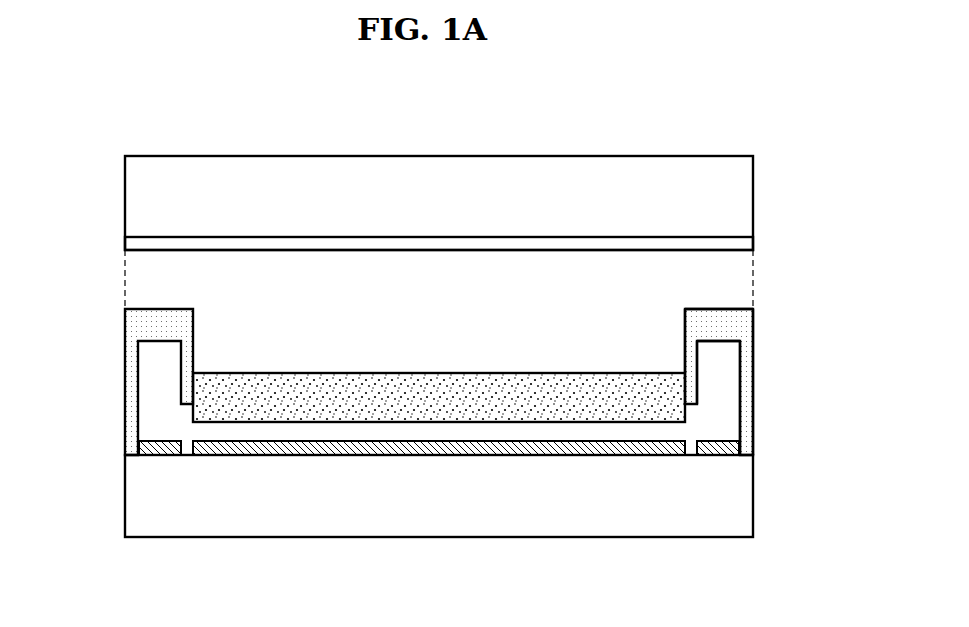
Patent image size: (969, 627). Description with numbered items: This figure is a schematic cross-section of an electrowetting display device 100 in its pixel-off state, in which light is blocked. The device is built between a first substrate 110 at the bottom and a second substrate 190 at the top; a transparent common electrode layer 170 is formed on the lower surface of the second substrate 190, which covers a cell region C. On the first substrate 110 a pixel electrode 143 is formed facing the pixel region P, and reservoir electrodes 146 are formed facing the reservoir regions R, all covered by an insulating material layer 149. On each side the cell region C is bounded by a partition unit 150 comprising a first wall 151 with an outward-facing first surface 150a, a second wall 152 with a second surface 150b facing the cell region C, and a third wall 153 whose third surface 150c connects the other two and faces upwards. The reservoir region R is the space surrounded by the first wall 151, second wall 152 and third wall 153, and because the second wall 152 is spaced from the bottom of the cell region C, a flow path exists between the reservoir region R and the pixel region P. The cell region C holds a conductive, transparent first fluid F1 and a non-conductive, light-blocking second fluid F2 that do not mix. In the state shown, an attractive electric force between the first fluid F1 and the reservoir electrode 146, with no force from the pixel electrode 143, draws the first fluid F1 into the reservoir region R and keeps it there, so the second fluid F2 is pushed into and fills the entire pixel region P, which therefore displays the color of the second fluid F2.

The electrowetting display device 100 is at (758, 112).
The first substrate 110 is at (740, 494).
The pixel electrode 143 is at (440, 452).
The reservoir electrode 146 is at (160, 455).
The insulating material layer 149 is at (301, 432).
The partition unit 150 is at (760, 360).
The first surface 150a is at (755, 327).
The second surface 150b is at (686, 323).
The third surface 150c is at (718, 308).
The first wall 151 is at (745, 387).
The second wall 152 is at (697, 351).
The third wall 153 is at (705, 314).
The common electrode layer 170 is at (740, 243).
The second substrate 190 is at (740, 193).
The pixel region P is at (200, 282).
The reservoir region R is at (152, 395).
The cell region C is at (60, 285).
The first fluid F1 is at (452, 304).
The second fluid F2 is at (452, 407).